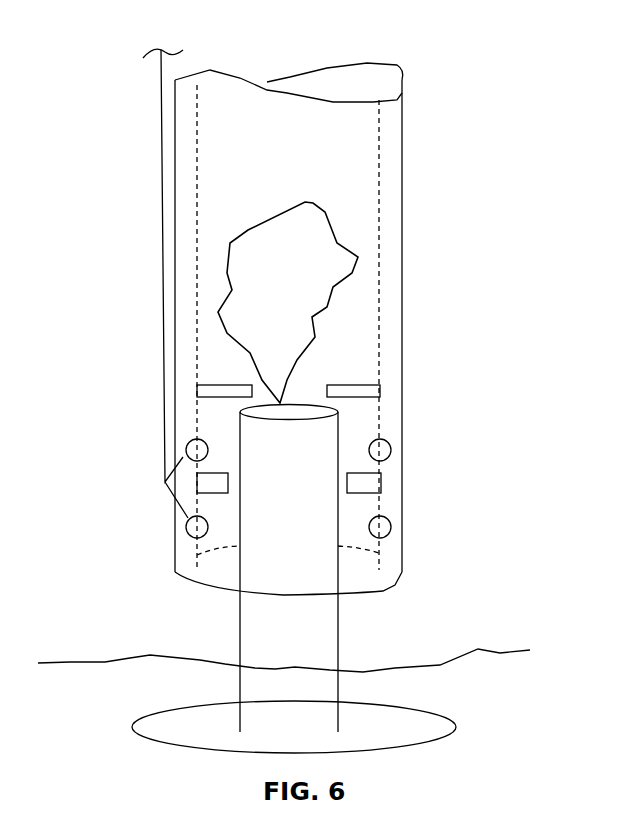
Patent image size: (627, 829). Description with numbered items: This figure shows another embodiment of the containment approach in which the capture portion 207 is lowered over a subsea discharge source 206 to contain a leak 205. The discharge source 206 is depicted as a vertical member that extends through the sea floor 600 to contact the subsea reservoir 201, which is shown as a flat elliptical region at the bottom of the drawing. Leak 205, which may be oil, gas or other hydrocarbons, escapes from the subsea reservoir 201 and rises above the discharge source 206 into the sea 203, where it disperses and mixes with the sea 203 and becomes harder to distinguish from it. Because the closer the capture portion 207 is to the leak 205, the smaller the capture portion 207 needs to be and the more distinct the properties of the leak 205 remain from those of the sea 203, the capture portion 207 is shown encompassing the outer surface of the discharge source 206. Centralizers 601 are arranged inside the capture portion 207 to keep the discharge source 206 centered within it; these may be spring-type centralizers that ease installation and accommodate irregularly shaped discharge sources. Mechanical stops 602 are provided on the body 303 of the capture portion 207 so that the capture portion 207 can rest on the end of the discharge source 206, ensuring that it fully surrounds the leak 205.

The subsea reservoir 201 is at (457, 722).
The sea 203 is at (550, 612).
The leak 205 is at (282, 238).
The discharge source 206 is at (237, 623).
The capture portion 207 is at (333, 322).
The body 303 is at (392, 255).
The sea floor 600 is at (97, 667).
The centralizers 601 is at (212, 493).
The mechanical stops 602 is at (225, 395).